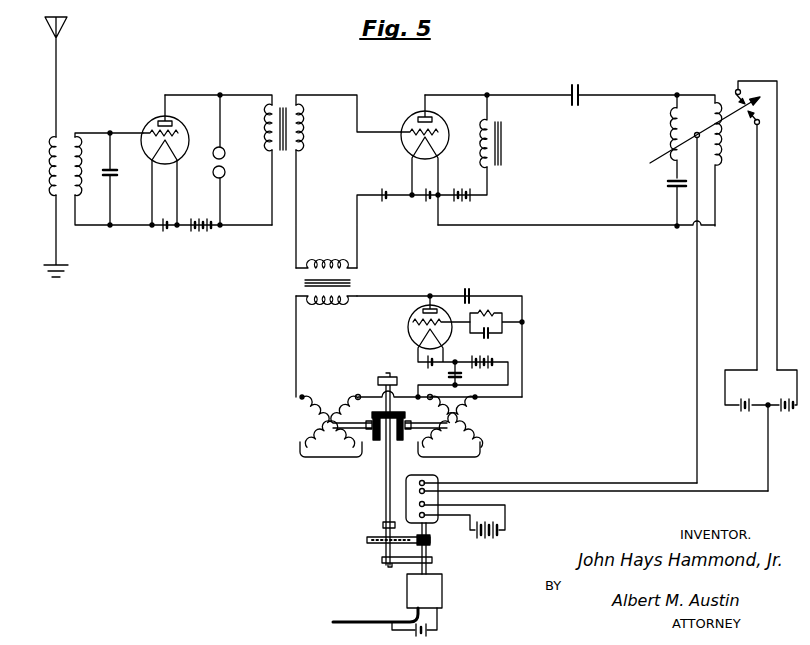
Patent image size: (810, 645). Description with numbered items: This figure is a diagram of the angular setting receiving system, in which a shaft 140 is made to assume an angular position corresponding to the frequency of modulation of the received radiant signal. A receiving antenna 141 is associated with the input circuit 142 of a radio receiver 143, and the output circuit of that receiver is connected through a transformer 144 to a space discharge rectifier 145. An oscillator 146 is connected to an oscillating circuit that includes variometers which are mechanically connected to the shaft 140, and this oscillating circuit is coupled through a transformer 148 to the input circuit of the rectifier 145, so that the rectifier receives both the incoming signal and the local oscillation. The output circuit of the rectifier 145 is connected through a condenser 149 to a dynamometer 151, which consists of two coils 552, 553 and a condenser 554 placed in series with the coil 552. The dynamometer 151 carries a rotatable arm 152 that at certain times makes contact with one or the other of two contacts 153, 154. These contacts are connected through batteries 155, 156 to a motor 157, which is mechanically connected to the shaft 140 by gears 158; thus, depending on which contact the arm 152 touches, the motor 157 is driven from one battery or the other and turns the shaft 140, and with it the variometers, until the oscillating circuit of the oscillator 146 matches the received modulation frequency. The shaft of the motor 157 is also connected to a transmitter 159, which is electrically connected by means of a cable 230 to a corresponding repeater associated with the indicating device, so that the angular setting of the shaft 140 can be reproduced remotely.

The shaft 140 is at (385, 503).
The receiving antenna 141 is at (66, 26).
The input circuit 142 is at (104, 214).
The radio receiver 143 is at (153, 117).
The transformer 144 is at (285, 99).
The space discharge rectifier 145 is at (415, 121).
The oscillator 146 is at (408, 318).
The transformer 148 is at (300, 288).
The condenser 149 is at (580, 94).
The dynamometer 151 is at (711, 86).
The rotatable arm 152 is at (728, 118).
The contact 153 is at (737, 89).
The contact 154 is at (760, 122).
The battery 155 is at (745, 413).
The battery 156 is at (787, 413).
The motor 157 is at (437, 527).
The gears 158 is at (380, 544).
The transmitter 159 is at (442, 590).
The cable 230 is at (372, 626).
The coil 552 is at (673, 153).
The coil 553 is at (716, 160).
The condenser 554 is at (669, 187).